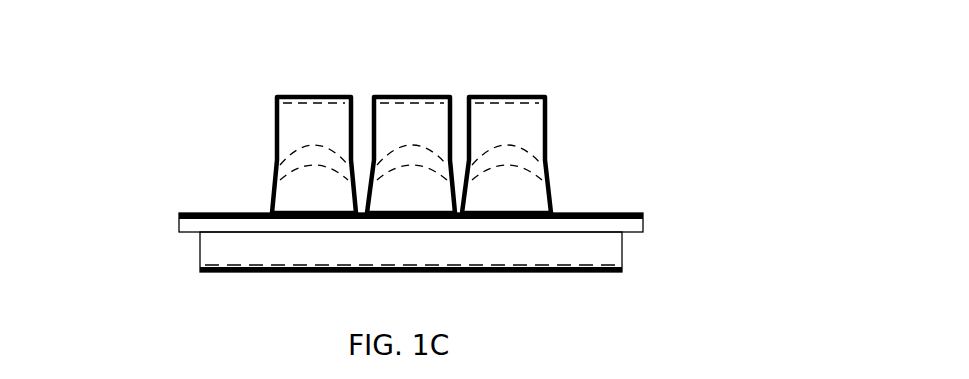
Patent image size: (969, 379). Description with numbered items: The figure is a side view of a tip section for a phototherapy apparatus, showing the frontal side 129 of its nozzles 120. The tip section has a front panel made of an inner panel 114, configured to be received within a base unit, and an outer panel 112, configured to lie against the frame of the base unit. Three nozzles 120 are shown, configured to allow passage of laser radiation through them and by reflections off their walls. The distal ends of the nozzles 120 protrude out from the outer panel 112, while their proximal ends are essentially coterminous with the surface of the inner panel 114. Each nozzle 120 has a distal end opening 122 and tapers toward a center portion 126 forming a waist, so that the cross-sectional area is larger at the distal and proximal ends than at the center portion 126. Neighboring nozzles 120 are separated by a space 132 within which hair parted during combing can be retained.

The outer panel 112 is at (178, 221).
The inner panel 114 is at (198, 255).
The nozzles 120 is at (547, 121).
The distal end opening 122 is at (305, 94).
The center portion 126 is at (546, 167).
The frontal side 129 is at (297, 124).
The space 132 is at (458, 103).